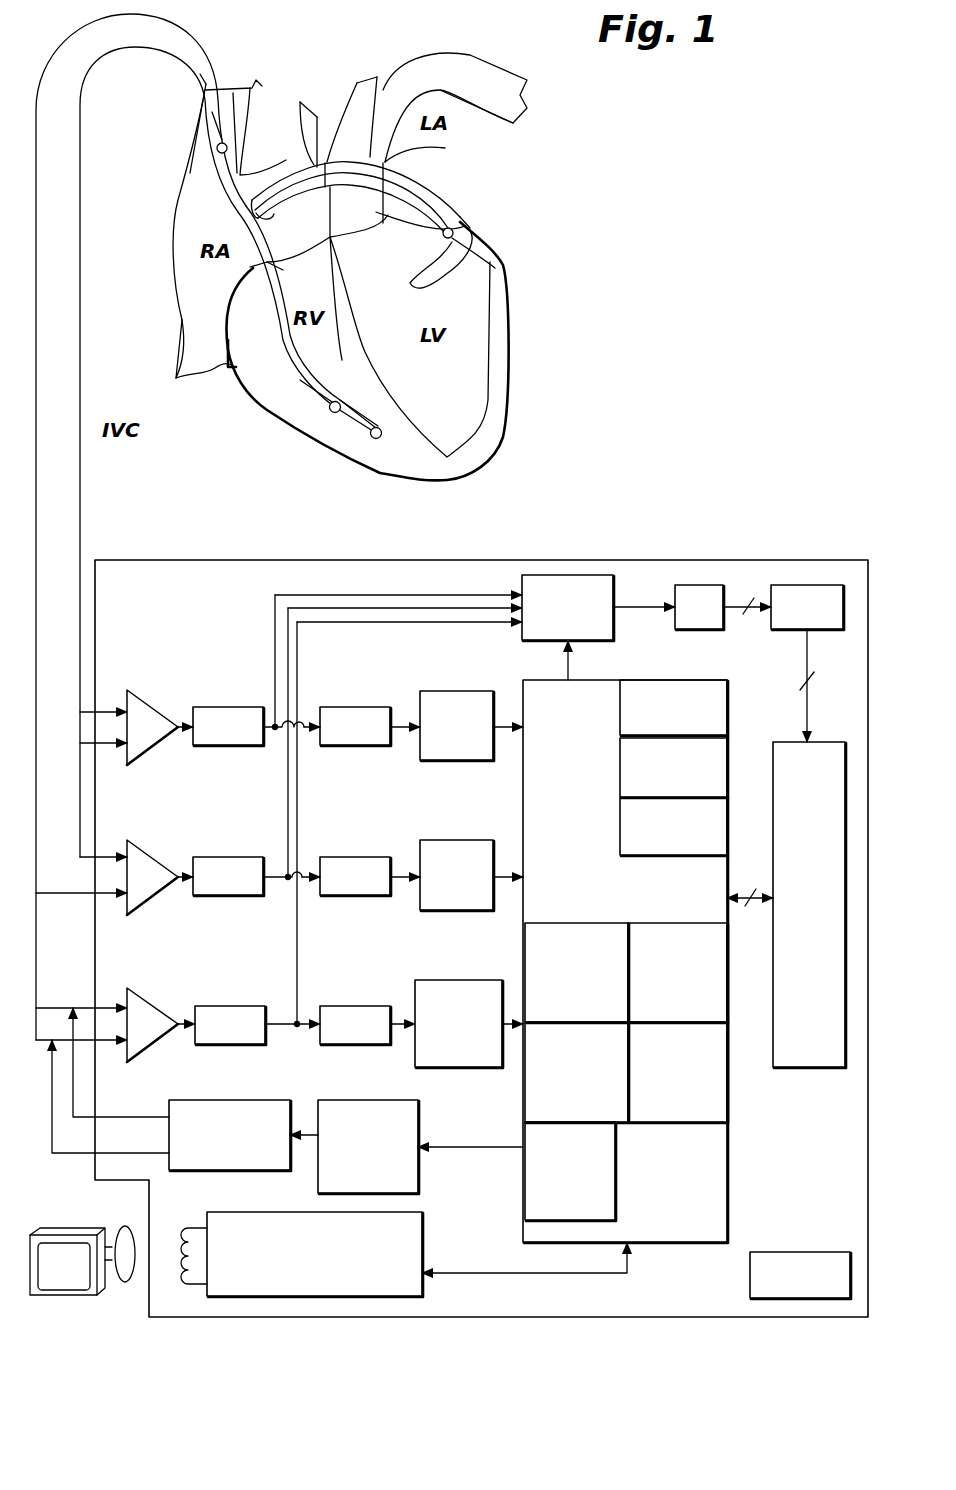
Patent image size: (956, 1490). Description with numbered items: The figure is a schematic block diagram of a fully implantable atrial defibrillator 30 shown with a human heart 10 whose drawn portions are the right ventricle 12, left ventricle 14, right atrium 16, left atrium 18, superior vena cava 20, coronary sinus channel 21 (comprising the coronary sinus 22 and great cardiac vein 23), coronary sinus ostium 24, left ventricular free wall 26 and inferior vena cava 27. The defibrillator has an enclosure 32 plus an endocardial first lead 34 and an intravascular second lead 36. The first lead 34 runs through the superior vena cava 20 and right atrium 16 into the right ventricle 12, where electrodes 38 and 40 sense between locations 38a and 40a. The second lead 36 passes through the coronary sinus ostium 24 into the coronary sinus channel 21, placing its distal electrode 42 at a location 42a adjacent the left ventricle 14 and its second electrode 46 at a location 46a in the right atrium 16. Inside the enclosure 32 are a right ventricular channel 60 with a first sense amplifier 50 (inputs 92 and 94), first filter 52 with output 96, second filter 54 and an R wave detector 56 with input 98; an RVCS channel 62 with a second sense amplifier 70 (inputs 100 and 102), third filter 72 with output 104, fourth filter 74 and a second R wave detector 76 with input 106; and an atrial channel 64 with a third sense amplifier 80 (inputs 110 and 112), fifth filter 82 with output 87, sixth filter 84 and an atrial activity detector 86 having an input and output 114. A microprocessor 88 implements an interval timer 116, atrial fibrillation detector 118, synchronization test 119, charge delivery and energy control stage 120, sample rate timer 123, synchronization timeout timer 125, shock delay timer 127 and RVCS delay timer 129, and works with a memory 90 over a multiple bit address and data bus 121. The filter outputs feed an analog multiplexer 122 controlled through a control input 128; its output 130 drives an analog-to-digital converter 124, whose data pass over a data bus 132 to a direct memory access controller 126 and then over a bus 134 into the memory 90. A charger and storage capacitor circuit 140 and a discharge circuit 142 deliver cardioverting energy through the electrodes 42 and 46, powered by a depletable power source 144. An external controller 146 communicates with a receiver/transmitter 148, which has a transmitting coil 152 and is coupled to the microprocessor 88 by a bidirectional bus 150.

The heart 10 is at (752, 136).
The right ventricle 12 is at (279, 355).
The left ventricle 14 is at (457, 425).
The right atrium 16 is at (196, 205).
The left atrium 18 is at (397, 162).
The superior vena cava 20 is at (238, 117).
The coronary sinus channel 21 is at (361, 160).
The coronary sinus 22 is at (316, 150).
The great cardiac vein 23 is at (462, 216).
The coronary sinus ostium 24 is at (283, 195).
The left ventricular free wall 26 is at (462, 228).
The inferior vena cava 27 is at (200, 330).
The atrial defibrillator 30 is at (748, 503).
The enclosure 32 is at (590, 560).
The endocardial first lead 34 is at (82, 514).
The intravascular second lead 36 is at (37, 481).
The electrode 38 is at (376, 440).
The location 38a is at (382, 439).
The electrode 40 is at (334, 414).
The location 40a is at (330, 412).
The first or distal electrode 42 is at (468, 258).
The location 42a is at (470, 242).
The second electrode 46 is at (217, 144).
The location 46a is at (217, 150).
The first sense amplifier 50 is at (144, 745).
The first filter 52 is at (242, 707).
The second filter 54 is at (367, 707).
The R wave detector 56 is at (452, 691).
The right ventricular channel 60 is at (157, 651).
The right ventricular-coronary sinus channel 62 is at (165, 823).
The atrial channel 64 is at (170, 977).
The second sense amplifier 70 is at (145, 893).
The third filter 72 is at (239, 857).
The fourth filter 74 is at (365, 857).
The second R wave detector 76 is at (452, 840).
The third sense amplifier 80 is at (145, 1042).
The fifth filter 82 is at (243, 1006).
The sixth filter 84 is at (365, 1006).
The atrial activity detector 86 is at (441, 980).
The output 87 is at (268, 1030).
The microprocessor 88 is at (728, 1172).
The memory 90 is at (801, 1069).
The first input 92 is at (120, 710).
The second input 94 is at (122, 745).
The output 96 is at (268, 746).
The input 98 is at (414, 728).
The first input 100 is at (122, 895).
The second input 102 is at (122, 856).
The output 104 is at (267, 896).
The input 106 is at (418, 878).
The first input 110 is at (122, 1007).
The second input 112 is at (122, 1043).
The input and output 114 is at (412, 1028).
The interval timer 116 is at (621, 837).
The atrial fibrillation detector 118 is at (621, 724).
The synchronization test 119 is at (621, 780).
The charge delivery and energy control stage 120 is at (617, 1146).
The multiple bit address and data bus 121 is at (748, 890).
The analog multiplexer 122 is at (532, 641).
The sample rate timer 123 is at (527, 950).
The analog-to-digital converter 124 is at (712, 631).
The synchronization timeout timer 125 is at (718, 1007).
The direct memory access controller 126 is at (790, 631).
The shock delay timer 127 is at (527, 1093).
The control input 128 is at (570, 660).
The RVCS delay timer 129 is at (718, 1090).
The output 130 is at (615, 605).
The multiple bit data bus 132 is at (748, 606).
The multiple bit bus 134 is at (806, 686).
The charger and storage capacitor circuit 140 is at (325, 1100).
The discharge circuit 142 is at (225, 1100).
The depletable power source 144 is at (790, 1252).
The external controller 146 is at (57, 1235).
The receiver/transmitter 148 is at (423, 1257).
The bidirectional bus 150 is at (496, 1274).
The transmitting coil 152 is at (182, 1228).